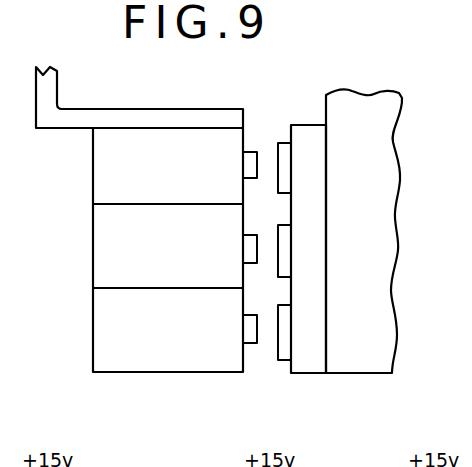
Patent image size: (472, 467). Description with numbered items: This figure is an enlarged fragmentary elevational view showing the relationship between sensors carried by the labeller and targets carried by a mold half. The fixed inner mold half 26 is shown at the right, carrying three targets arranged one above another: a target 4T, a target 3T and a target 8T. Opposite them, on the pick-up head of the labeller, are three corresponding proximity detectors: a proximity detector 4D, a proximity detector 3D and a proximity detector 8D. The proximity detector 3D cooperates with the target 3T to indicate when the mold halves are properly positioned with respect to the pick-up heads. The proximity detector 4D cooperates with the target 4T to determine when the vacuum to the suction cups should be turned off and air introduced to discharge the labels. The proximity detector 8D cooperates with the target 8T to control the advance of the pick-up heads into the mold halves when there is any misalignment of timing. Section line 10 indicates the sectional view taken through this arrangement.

The fixed inner mold half 26 is at (371, 100).
The proximity detector 4D is at (104, 179).
The proximity detector 3D is at (108, 252).
The proximity detector 8D is at (110, 330).
The target 4T is at (274, 173).
The target 3T is at (274, 255).
The target 8T is at (274, 338).
The section line 10- 10 is at (305, 71).